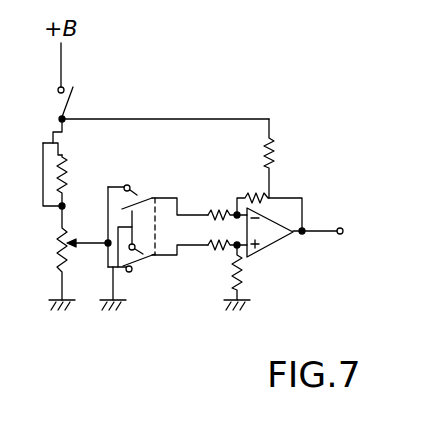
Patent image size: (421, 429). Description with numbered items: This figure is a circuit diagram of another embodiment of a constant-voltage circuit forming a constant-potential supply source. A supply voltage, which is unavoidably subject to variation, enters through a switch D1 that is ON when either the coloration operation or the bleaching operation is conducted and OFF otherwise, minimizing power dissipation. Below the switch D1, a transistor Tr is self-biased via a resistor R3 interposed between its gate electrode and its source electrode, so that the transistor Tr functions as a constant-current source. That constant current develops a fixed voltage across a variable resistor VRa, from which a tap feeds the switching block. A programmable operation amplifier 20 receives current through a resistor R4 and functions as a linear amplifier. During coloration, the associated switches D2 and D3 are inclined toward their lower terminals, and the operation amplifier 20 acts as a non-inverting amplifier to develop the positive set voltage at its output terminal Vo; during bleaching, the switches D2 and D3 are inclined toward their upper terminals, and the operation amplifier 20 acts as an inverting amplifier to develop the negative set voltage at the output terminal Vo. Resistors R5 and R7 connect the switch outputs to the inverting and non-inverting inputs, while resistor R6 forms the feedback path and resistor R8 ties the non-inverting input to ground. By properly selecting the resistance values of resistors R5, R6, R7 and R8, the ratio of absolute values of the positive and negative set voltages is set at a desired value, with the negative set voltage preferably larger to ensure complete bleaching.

The switch D1 is at (83, 99).
The transistor Tr is at (43, 162).
The resistor R3 is at (77, 182).
The variable resistor VRa is at (63, 258).
The switch D2 is at (134, 186).
The switch D3 is at (136, 254).
The resistor R4 is at (286, 158).
The resistor R5 is at (227, 206).
The resistor R6 is at (269, 205).
The resistor R7 is at (225, 262).
The resistor R8 is at (250, 277).
The programmable operation amplifier 20 is at (274, 250).
The output terminal Vo is at (333, 235).